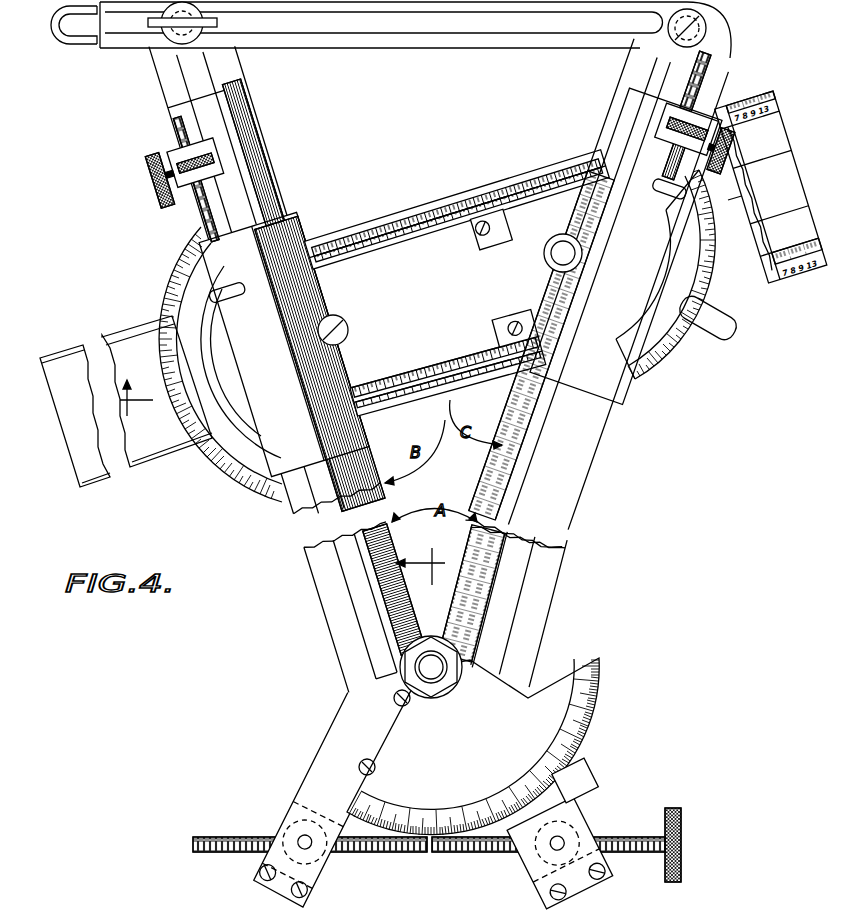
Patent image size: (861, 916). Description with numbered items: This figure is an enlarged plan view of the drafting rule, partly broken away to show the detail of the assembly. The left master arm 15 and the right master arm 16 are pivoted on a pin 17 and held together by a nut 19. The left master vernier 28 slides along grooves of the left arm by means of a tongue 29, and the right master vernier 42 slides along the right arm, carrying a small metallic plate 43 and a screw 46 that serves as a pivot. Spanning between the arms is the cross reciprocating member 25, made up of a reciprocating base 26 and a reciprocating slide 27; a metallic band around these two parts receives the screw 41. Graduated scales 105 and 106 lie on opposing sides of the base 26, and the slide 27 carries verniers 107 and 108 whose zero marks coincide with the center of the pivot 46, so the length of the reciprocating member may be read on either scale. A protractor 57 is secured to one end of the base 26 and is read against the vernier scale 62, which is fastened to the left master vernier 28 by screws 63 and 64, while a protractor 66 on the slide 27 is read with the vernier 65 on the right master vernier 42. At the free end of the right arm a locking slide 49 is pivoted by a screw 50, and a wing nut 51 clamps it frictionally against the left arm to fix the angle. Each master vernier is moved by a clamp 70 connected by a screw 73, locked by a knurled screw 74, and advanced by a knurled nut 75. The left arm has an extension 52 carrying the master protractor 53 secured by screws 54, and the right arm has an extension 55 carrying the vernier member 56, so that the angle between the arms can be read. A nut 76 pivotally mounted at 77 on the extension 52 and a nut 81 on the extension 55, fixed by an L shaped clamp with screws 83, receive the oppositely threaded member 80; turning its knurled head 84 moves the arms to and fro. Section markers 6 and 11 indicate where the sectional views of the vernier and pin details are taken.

The section line indicator 6 is at (408, 328).
The section line indicator 11 is at (412, 590).
The left master arm 15 is at (312, 585).
The right master arm 16 is at (542, 566).
The pin 17 is at (433, 688).
The nut 19 is at (455, 672).
The cross reciprocating member 25 is at (456, 194).
The reciprocating base 26 is at (458, 212).
The reciprocating slide 27 is at (455, 203).
The left master vernier 28 is at (284, 344).
The tongue 29 is at (343, 325).
The screw 41 is at (350, 333).
The right master vernier 42 is at (626, 246).
The small metallic plate 43 is at (548, 255).
The screw 46 is at (558, 262).
The locking slide 49 is at (440, 48).
The screw 50 is at (708, 30).
The wing nut 51 is at (178, 38).
The extension 52 is at (322, 745).
The master protractor 53 is at (543, 680).
The screws 54 is at (376, 767).
The extension 55 is at (578, 812).
The vernier member 56 is at (590, 772).
The protractor 57 is at (240, 472).
The vernier scale 62 is at (208, 372).
The screw 63 is at (238, 447).
The screw 64 is at (208, 292).
The vernier 65 is at (672, 352).
The protractor 66 is at (724, 310).
The clamp 70 is at (242, 136).
The screw 73 is at (196, 206).
The knurled screw 74 is at (150, 172).
The knurled nut 75 is at (185, 158).
The nut 76 is at (322, 864).
The pivot mounting 77 is at (300, 838).
The threaded member 80 is at (630, 838).
The nut 81 is at (552, 870).
The screws 83 is at (292, 892).
The knurled head 84 is at (680, 812).
The graduated scale 105 is at (528, 168).
The graduated scale 106 is at (445, 366).
The vernier 107 is at (480, 242).
The vernier 108 is at (503, 316).